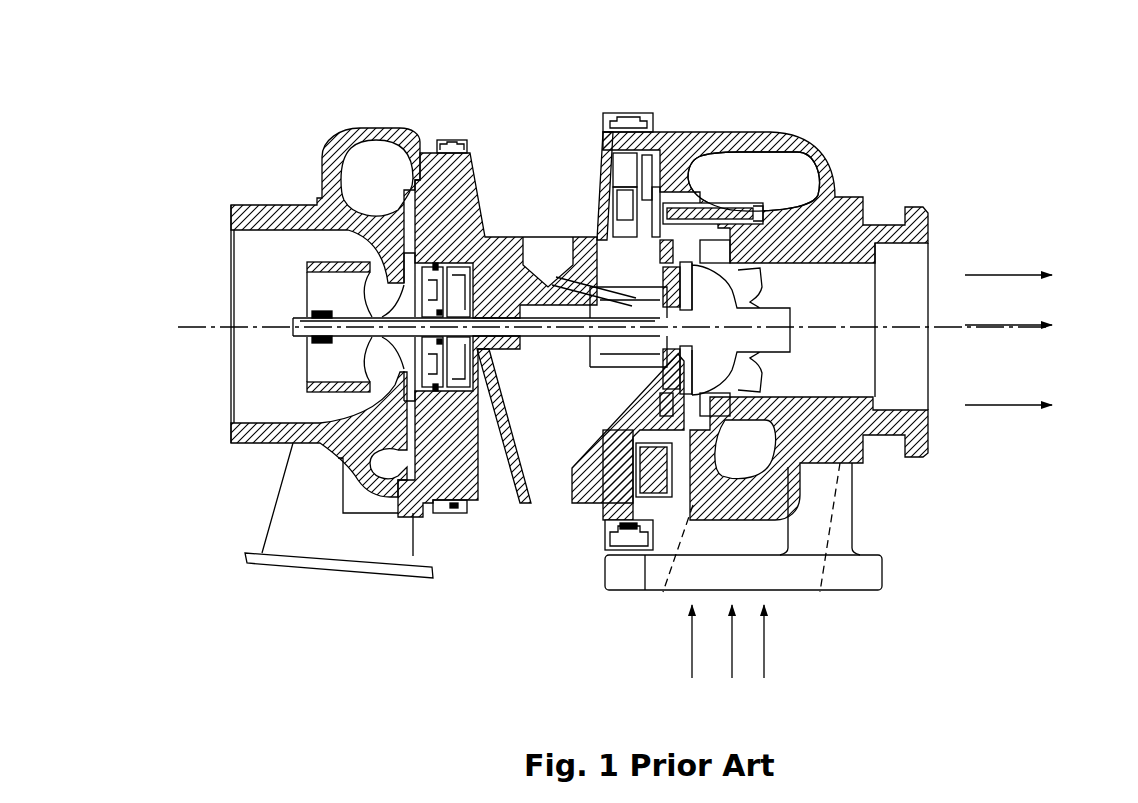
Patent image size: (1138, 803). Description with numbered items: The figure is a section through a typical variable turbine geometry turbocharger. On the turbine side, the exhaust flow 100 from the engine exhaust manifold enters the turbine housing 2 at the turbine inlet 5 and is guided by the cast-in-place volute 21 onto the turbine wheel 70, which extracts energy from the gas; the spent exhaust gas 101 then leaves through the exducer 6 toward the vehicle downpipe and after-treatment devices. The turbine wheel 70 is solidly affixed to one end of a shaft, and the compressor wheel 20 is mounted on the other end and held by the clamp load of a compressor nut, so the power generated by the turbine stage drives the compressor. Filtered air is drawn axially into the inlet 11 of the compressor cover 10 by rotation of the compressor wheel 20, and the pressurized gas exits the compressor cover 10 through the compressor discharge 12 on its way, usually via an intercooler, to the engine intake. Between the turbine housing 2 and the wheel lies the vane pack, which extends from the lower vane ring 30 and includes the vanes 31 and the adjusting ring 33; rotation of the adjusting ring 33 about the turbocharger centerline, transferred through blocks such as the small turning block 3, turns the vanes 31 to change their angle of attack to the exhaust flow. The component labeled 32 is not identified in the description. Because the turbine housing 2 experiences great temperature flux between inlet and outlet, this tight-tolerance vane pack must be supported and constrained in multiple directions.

The turbine housing 2 is at (857, 467).
The small turning block 3 is at (480, 202).
The turbine inlet 5 is at (797, 592).
The exducer 6 is at (905, 262).
The compressor cover 10 is at (293, 441).
The inlet 11 is at (229, 303).
The compressor discharge 12 is at (270, 565).
The compressor wheel 20 is at (417, 340).
The volute 21 is at (797, 179).
The lower vane ring 30 is at (580, 470).
The vane 31 is at (740, 223).
The clamp 32 is at (605, 500).
The adjusting ring 33 is at (652, 163).
The turbine wheel 70 is at (793, 328).
The exhaust flow 100 is at (768, 655).
The spent exhaust gas 101 is at (1030, 273).